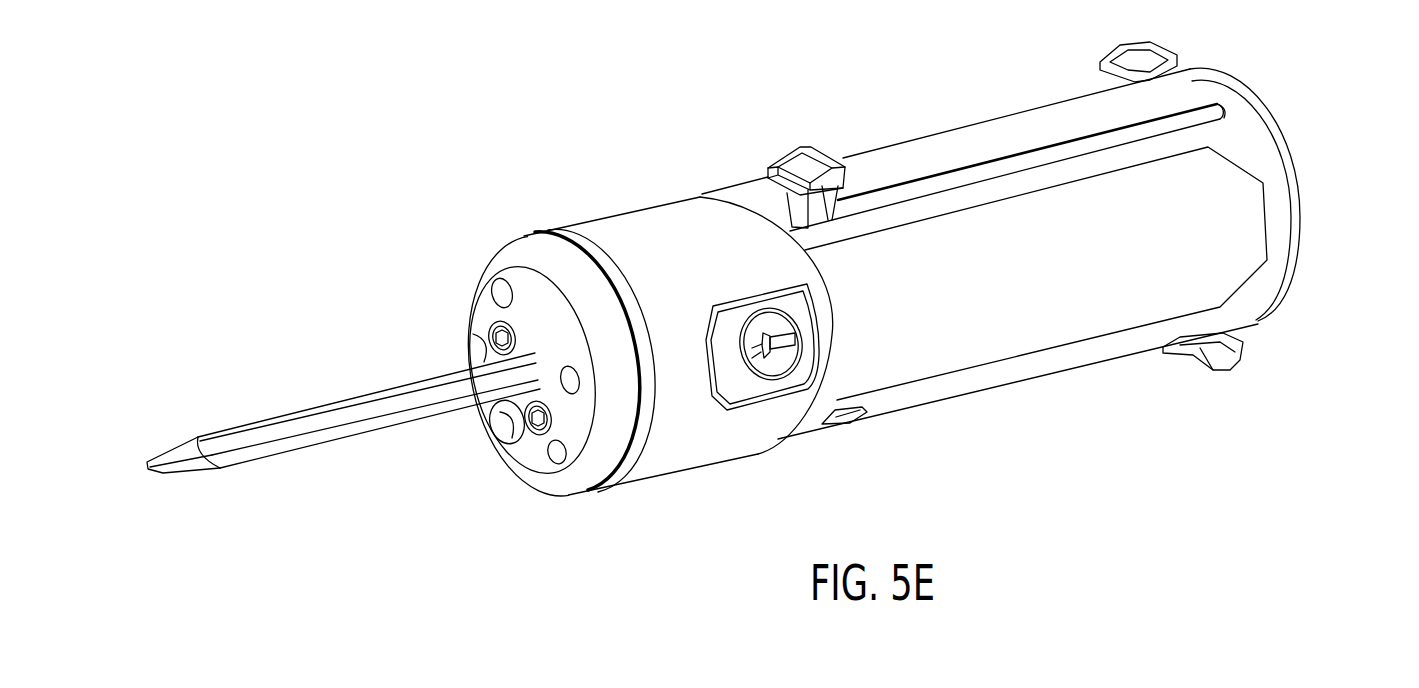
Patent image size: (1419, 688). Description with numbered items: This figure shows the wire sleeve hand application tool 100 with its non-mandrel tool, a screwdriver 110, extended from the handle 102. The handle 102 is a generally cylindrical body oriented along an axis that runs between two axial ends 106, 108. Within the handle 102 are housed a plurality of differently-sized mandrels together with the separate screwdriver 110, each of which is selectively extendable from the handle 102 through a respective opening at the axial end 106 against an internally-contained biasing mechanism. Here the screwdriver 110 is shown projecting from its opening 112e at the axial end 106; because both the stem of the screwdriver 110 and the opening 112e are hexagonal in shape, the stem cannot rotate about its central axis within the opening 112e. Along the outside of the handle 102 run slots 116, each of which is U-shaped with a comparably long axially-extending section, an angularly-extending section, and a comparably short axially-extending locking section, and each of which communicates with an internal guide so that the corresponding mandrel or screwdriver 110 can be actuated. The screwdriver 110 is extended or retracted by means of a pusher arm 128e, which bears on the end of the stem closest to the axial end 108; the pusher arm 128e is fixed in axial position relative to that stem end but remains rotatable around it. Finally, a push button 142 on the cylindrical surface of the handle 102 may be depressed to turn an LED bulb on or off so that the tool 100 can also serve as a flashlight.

The wire sleeve hand application tool 100 is at (752, 279).
The handle 102 is at (1023, 279).
The axial end 106 is at (567, 346).
The axial end 108 is at (1310, 144).
The screwdriver 110 is at (352, 428).
The opening 112e is at (519, 290).
The slot 116 is at (1001, 167).
The pusher arm 128e is at (813, 147).
The push button 142 is at (733, 393).